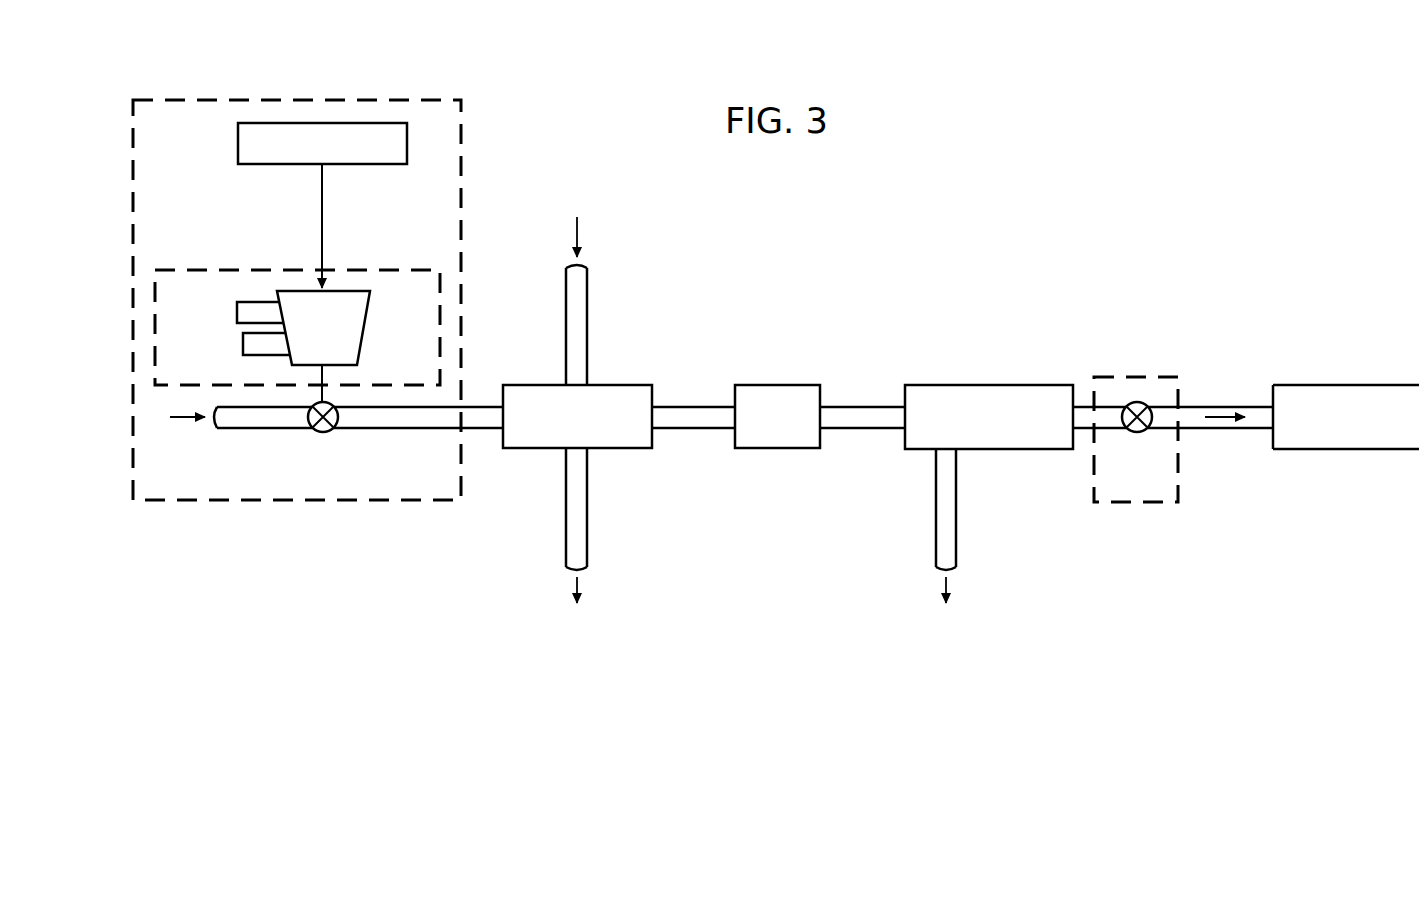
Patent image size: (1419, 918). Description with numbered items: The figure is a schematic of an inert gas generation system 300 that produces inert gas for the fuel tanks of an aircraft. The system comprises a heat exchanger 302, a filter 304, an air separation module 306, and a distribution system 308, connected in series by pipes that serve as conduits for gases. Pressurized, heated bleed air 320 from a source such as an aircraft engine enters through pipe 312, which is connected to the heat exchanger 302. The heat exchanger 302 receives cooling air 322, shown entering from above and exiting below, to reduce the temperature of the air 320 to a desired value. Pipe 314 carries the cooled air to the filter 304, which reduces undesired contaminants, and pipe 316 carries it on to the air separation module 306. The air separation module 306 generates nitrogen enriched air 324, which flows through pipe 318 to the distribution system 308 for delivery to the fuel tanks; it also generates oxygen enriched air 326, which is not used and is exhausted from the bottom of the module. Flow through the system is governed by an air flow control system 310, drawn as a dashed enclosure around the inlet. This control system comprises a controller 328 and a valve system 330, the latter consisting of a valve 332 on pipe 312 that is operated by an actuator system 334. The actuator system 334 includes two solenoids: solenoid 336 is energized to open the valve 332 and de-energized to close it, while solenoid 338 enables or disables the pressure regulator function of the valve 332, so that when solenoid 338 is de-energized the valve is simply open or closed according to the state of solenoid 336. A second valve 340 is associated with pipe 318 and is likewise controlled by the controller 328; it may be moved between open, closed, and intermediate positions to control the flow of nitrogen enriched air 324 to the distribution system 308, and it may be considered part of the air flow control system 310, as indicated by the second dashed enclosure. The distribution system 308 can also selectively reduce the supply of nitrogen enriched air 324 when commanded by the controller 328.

The inert gas generation system 300 is at (1078, 167).
The heat exchanger 302 is at (535, 450).
The filter 304 is at (778, 450).
The air separation module 306 is at (988, 452).
The distribution system 308 is at (1347, 451).
The air flow control system 310 is at (248, 98).
The pipe 312 is at (413, 430).
The pipe 314 is at (693, 431).
The pipe 316 is at (857, 431).
The pipe 318 is at (1237, 431).
The air 320 is at (185, 418).
The cooling air 322 is at (577, 230).
The nitrogen enriched air 324 is at (1222, 412).
The oxygen enriched air 326 is at (950, 588).
The controller 328 is at (238, 142).
The valve system 330 is at (280, 268).
The valve 332 is at (327, 435).
The actuator system 334 is at (365, 325).
The solenoid 336 is at (237, 312).
The solenoid 338 is at (243, 343).
The valve 340 is at (1140, 433).